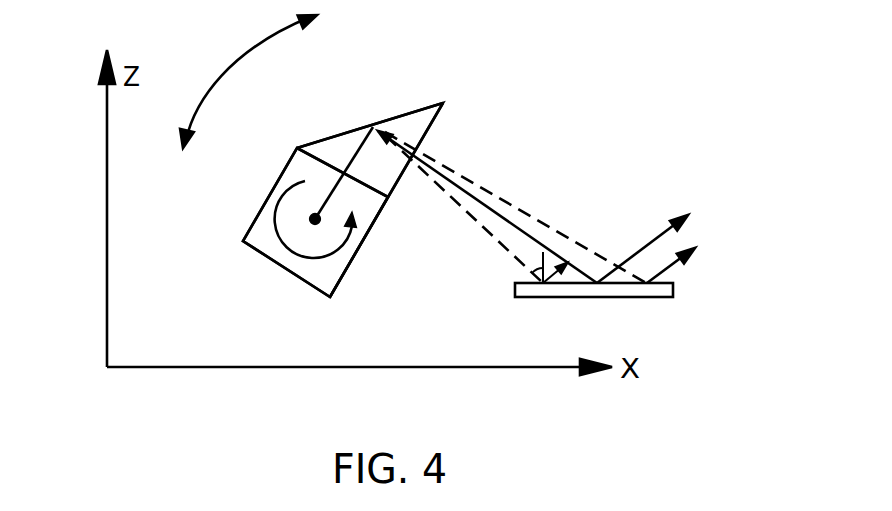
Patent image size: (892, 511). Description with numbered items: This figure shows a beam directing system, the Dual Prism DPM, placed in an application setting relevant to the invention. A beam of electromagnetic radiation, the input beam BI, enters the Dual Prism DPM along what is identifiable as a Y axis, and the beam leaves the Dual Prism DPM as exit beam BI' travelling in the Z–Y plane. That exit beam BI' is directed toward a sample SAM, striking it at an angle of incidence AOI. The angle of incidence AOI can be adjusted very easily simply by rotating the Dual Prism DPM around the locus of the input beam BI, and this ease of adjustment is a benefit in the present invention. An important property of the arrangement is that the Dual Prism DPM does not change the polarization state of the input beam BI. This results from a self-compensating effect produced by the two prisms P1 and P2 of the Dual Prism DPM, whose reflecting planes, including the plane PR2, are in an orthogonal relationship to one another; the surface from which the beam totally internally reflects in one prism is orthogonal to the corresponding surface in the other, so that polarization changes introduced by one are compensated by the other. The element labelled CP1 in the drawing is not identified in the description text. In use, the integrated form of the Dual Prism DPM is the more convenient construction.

The Beam Directing System (Dual Prism) DPM is at (460, 126).
The orthogonal plane PR2 is at (360, 122).
The compensating plate CP1 is at (272, 279).
The prism P1 is at (362, 262).
The prism P2 is at (409, 180).
The input beam BI is at (289, 215).
The exit beam BI' is at (512, 207).
The angle of incidence AOI is at (536, 263).
The sample SAM is at (646, 308).